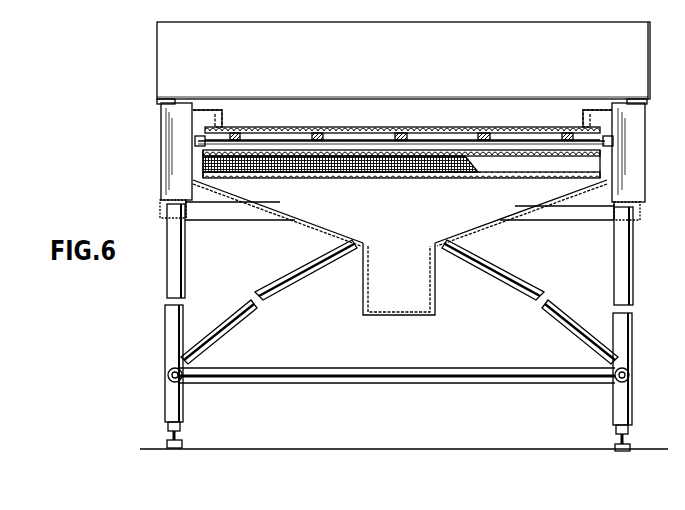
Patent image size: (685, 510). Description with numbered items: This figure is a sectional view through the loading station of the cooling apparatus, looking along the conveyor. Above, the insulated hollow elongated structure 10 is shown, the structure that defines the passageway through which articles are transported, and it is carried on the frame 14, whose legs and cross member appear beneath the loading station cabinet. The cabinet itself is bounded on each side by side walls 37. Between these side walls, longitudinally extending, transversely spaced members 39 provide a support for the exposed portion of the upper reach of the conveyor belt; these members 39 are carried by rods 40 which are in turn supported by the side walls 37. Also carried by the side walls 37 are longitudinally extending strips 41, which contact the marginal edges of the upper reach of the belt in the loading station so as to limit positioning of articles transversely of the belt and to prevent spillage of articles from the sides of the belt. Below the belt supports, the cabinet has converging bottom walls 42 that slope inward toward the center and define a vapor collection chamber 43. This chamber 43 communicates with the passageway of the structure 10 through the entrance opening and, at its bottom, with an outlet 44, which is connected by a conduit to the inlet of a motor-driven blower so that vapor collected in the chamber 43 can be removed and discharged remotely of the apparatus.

The hollow elongated structure 10 is at (578, 14).
The frame 14 is at (360, 368).
The side walls 37 is at (192, 124).
The longitudinally extending, transversely spaced members 39 is at (318, 128).
The rods 40 is at (210, 143).
The longitudinally extending strips 41 is at (223, 117).
The converging bottom walls 42 is at (297, 223).
The vapor collection chamber 43 is at (400, 217).
The outlet 44 is at (418, 298).